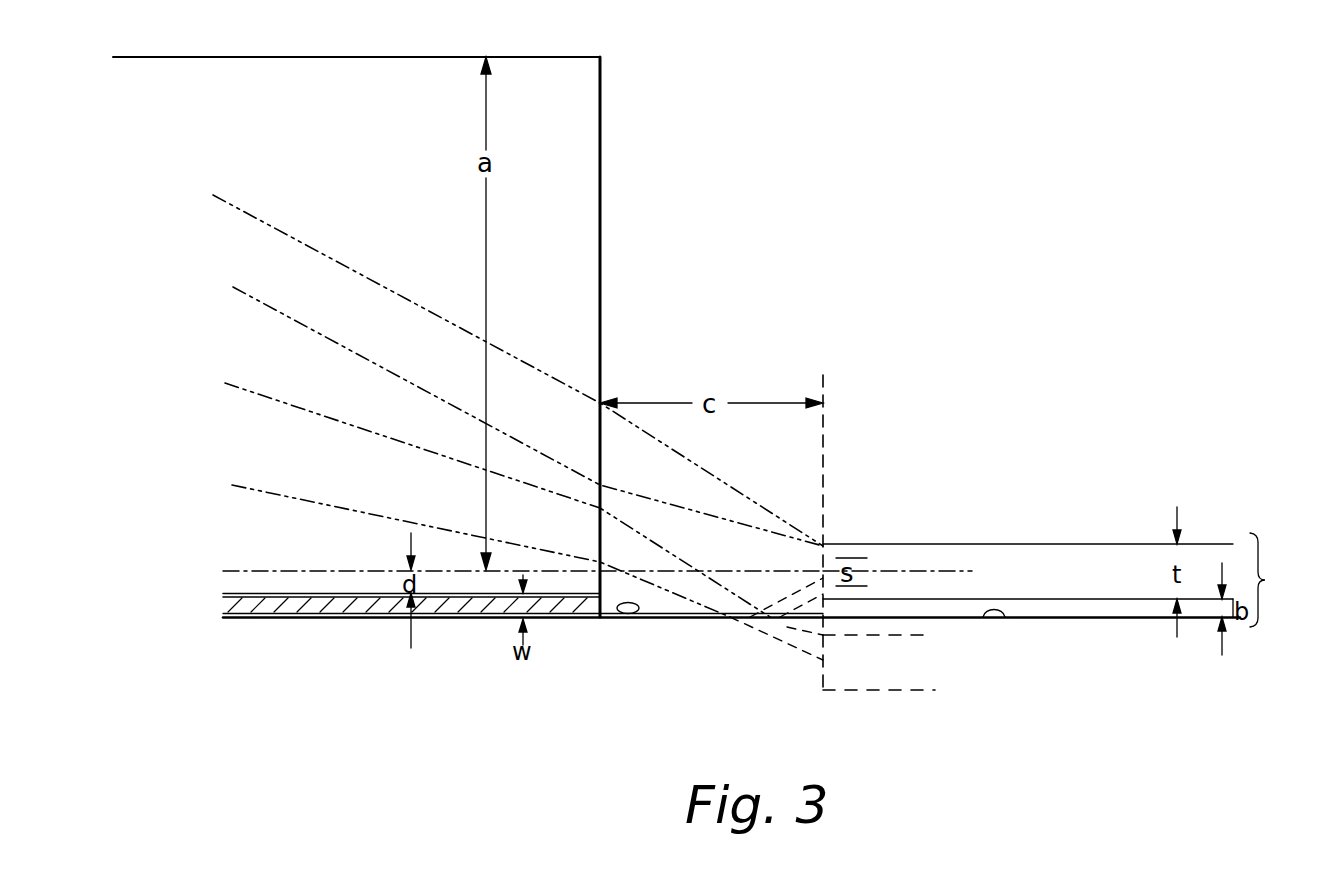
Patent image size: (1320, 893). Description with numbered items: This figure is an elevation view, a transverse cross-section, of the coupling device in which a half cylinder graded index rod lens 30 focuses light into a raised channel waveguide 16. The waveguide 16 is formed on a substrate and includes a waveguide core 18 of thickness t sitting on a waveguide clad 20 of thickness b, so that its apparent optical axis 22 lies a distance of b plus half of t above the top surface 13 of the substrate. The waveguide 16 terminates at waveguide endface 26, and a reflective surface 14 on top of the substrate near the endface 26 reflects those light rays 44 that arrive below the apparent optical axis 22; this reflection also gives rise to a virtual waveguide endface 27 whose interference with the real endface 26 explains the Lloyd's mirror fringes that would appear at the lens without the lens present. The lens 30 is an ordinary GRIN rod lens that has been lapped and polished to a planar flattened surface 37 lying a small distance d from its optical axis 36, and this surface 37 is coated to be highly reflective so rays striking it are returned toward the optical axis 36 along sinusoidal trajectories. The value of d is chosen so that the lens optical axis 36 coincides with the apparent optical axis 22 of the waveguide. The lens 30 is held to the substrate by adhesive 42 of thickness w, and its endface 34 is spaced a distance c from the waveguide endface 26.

The half cylinder graded index rod lens 30 is at (374, 57).
The endface 34 is at (600, 260).
The light rays 44 is at (497, 350).
The optical axis 36 is at (347, 568).
The flattened surface 37 is at (243, 620).
The adhesive 42 is at (330, 606).
The reflective surface 14 is at (626, 614).
The waveguide endface 26 is at (823, 548).
The virtual waveguide endface 27 is at (823, 672).
The apparent optical axis 22 is at (918, 570).
The waveguide core 18 is at (1038, 568).
The top surface 13 is at (1000, 617).
The waveguide clad 20 is at (1063, 617).
The raised channel waveguide 16 is at (1273, 580).